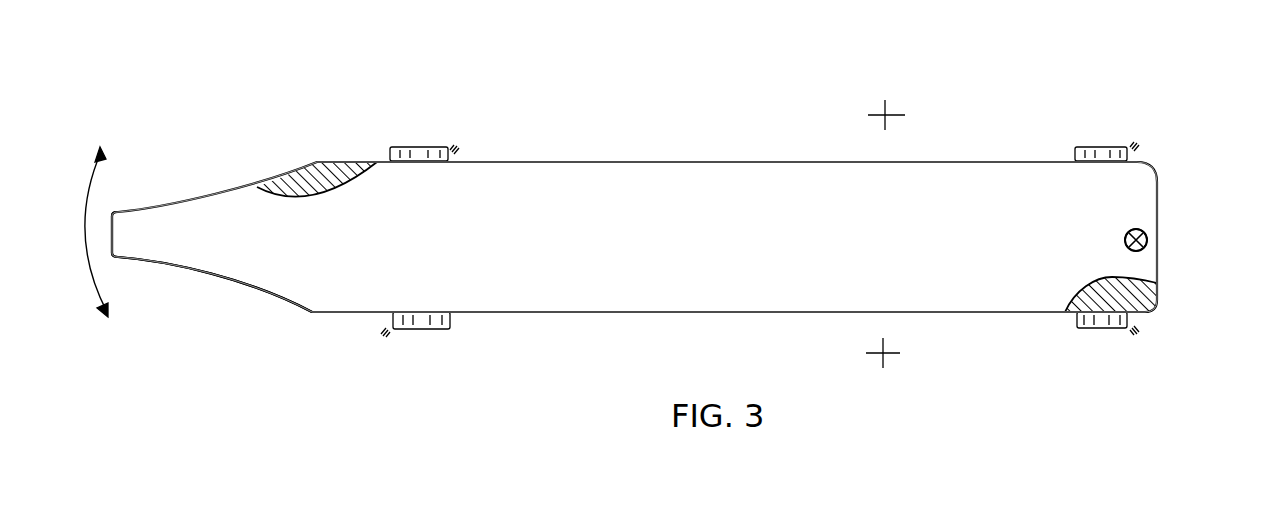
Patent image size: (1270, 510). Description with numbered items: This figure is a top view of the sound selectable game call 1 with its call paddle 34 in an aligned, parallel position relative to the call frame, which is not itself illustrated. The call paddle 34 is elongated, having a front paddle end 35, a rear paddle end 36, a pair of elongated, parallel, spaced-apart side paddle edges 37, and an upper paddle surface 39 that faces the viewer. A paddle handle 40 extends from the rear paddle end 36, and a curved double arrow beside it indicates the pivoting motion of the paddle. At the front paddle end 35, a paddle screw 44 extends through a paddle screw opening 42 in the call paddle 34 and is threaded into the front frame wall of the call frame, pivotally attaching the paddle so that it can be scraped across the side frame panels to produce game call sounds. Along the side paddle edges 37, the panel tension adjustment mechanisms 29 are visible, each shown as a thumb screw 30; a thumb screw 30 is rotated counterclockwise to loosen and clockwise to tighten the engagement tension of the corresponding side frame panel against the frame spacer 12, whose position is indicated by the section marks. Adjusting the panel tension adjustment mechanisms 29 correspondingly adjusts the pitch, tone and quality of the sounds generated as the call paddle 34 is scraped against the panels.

The sound selectable game call 1 is at (298, 97).
The frame spacer 12 is at (872, 235).
The panel tension adjustment mechanism 29 is at (450, 150).
The thumb screw 30 is at (430, 147).
The call paddle 34 is at (623, 160).
The front paddle end 35 is at (1158, 200).
The rear paddle end 36 is at (312, 312).
The side paddle edges 37 is at (745, 160).
The upper paddle surface 39 is at (703, 250).
The paddle handle 40 is at (139, 258).
The paddle screw opening 42 is at (1128, 232).
The paddle screw 44 is at (1125, 240).